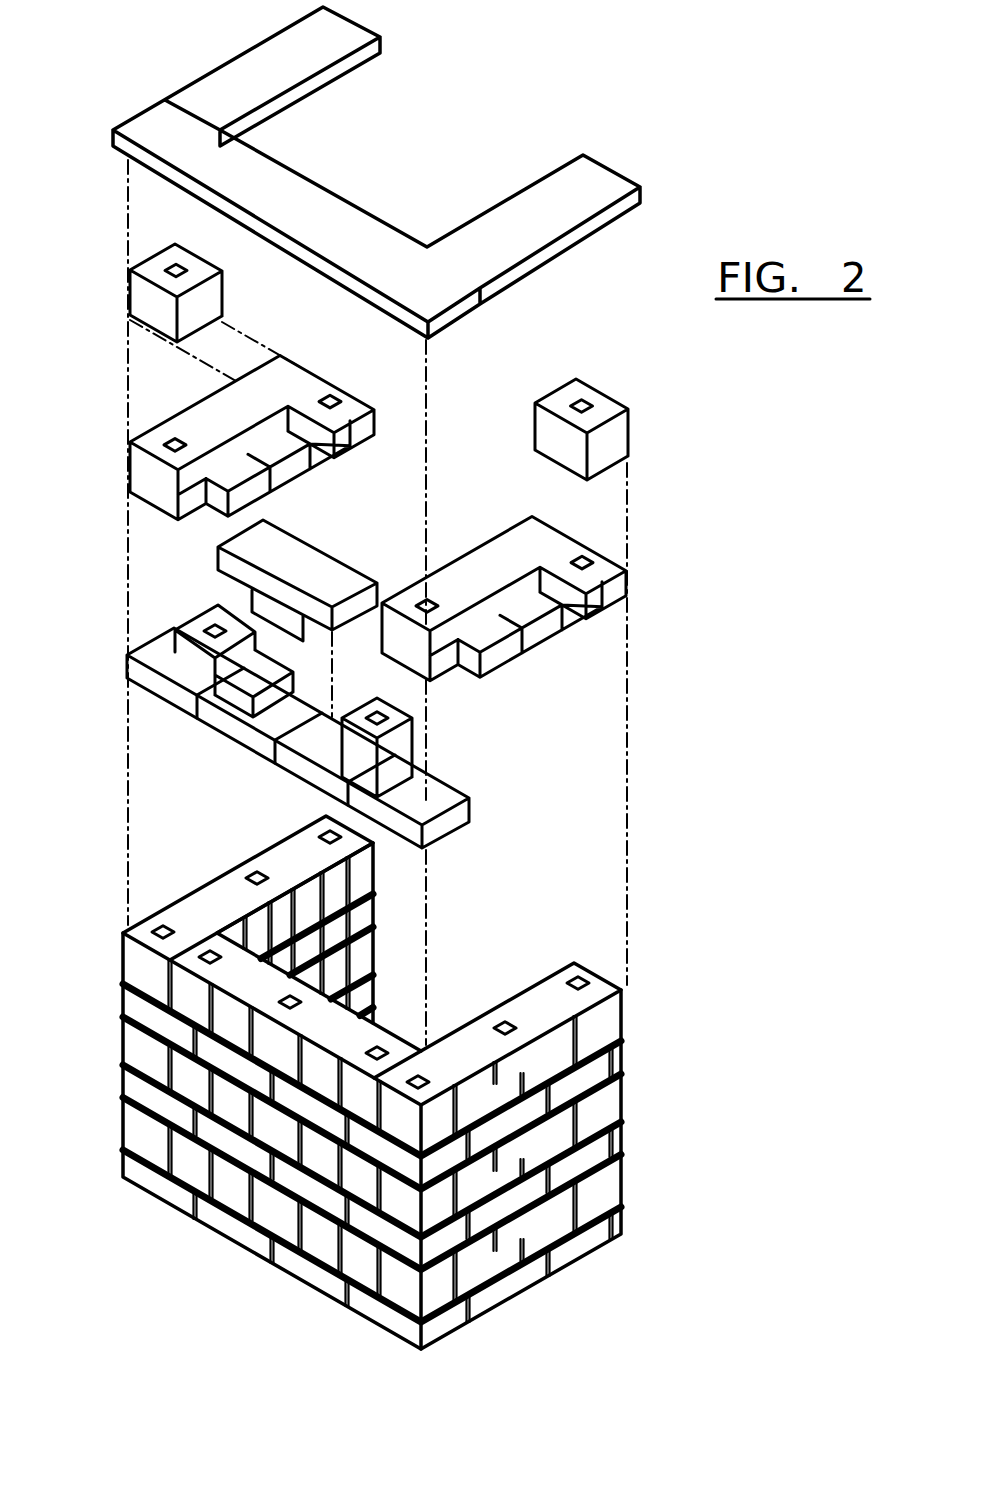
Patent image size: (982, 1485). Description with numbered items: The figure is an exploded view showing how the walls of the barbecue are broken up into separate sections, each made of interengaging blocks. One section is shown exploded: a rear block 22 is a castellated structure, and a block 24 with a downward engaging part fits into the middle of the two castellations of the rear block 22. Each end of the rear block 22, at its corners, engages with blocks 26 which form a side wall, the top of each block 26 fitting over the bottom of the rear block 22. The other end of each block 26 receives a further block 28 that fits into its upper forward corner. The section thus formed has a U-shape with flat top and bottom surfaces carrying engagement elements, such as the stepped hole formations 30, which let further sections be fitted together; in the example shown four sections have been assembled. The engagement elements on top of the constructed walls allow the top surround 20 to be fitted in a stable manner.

The top surround 20 is at (437, 285).
The rear block 22 is at (247, 737).
The block 24 is at (327, 573).
The block 26 is at (153, 473).
The further block 28 is at (203, 265).
The stepped hole formation 30 is at (322, 833).